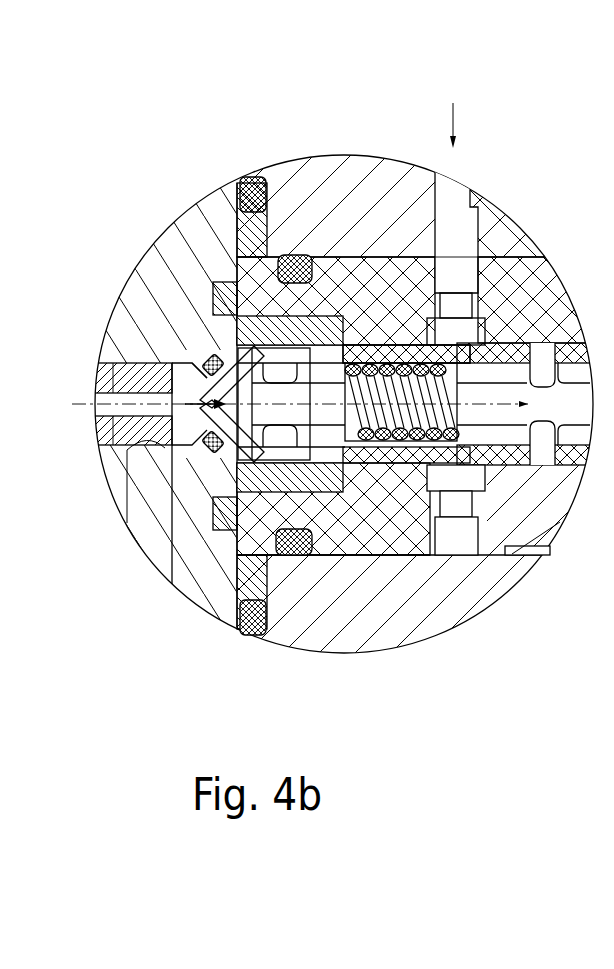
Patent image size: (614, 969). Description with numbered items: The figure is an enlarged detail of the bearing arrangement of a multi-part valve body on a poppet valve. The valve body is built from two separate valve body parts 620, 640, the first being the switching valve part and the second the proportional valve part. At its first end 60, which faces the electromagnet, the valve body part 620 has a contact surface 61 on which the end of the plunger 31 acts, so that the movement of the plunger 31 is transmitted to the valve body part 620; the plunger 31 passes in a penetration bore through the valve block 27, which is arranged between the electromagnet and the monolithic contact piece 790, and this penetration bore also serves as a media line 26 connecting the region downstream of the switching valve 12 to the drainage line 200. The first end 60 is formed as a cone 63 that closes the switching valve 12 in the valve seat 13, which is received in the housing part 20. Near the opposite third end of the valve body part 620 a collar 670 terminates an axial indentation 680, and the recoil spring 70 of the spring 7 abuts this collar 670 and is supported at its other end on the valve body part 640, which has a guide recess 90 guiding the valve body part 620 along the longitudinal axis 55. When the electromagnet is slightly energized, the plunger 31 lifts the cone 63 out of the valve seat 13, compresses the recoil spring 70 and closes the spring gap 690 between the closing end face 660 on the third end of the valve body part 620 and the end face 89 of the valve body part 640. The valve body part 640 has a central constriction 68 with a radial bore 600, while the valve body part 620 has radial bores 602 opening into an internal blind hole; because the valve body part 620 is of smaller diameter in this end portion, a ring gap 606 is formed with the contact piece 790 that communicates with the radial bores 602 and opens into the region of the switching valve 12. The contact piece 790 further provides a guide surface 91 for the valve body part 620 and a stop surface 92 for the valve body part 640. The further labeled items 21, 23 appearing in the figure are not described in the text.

The spring 7 is at (406, 354).
The switching valve 12 is at (200, 410).
The valve seat 13 is at (211, 356).
The housing part 20 is at (235, 265).
The upper housing part 21 is at (313, 158).
The actuation direction 23 is at (471, 126).
The media line 26 is at (200, 368).
The valve block 27 is at (120, 418).
The plunger 31 is at (150, 365).
The longitudinal axis 55 is at (83, 402).
The first end 60 is at (175, 518).
The contact surface 61 is at (205, 450).
The cone 63 is at (238, 580).
The constriction 68 is at (487, 325).
The recoil spring 70 is at (422, 470).
The end face 89 is at (512, 550).
The guide recess 90 is at (398, 557).
The guide surface 91 is at (303, 558).
The stop surface 92 is at (362, 330).
The drainage line 200 is at (190, 500).
The radial bore 600 is at (530, 300).
The radial bores 602 is at (253, 624).
The ring gap 606 is at (254, 177).
The valve body part 620 is at (355, 465).
The valve body part 640 is at (343, 470).
The closing end face 660 is at (485, 583).
The collar 670 is at (408, 320).
The indentation 680 is at (450, 535).
The spring gap 690 is at (452, 300).
The monolithic contact piece 790 is at (318, 262).